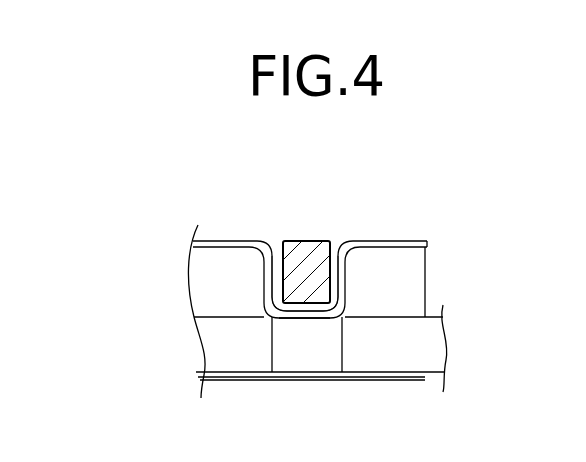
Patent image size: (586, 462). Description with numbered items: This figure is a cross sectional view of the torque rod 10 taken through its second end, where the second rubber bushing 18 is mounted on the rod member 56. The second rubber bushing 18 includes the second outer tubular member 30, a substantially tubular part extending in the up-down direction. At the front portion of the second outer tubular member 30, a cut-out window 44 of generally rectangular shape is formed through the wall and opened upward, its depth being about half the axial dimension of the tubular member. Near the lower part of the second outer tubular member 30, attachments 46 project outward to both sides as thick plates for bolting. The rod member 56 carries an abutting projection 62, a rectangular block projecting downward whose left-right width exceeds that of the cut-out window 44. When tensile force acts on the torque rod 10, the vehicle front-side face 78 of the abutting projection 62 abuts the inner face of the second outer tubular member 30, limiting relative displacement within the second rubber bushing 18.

The torque rod 10 is at (453, 187).
The second rubber bushing 18 is at (443, 238).
The second outer tubular member 30 is at (188, 272).
The cut-out window 44 is at (282, 252).
The attachment 46 is at (206, 357).
The rod member 56 is at (306, 251).
The abutting projection 62 is at (338, 285).
The vehicle front-side face 78 is at (304, 320).